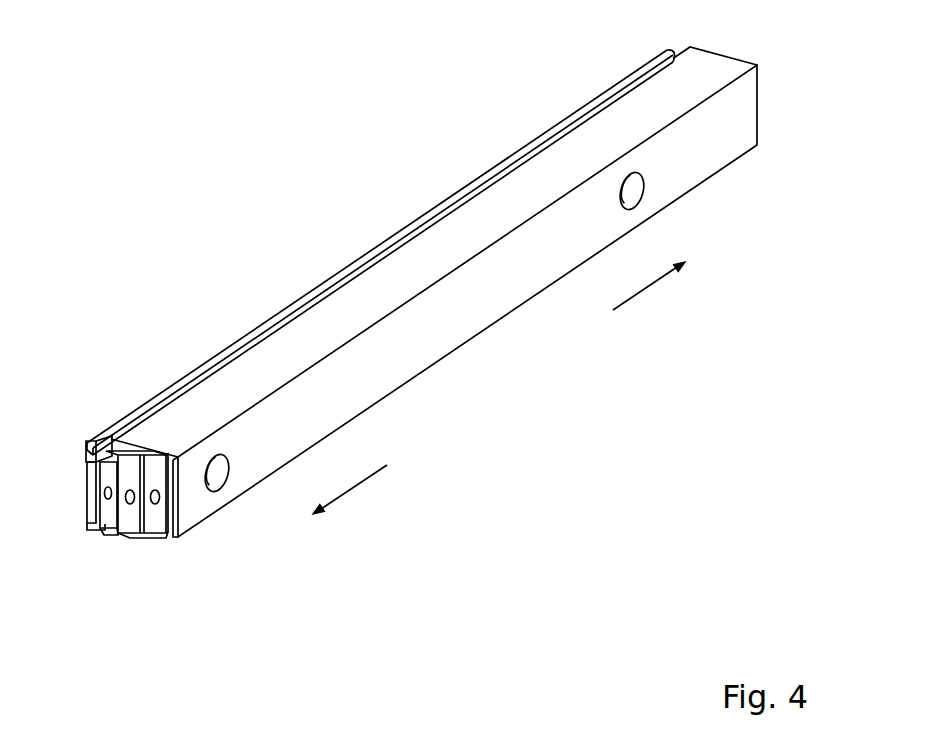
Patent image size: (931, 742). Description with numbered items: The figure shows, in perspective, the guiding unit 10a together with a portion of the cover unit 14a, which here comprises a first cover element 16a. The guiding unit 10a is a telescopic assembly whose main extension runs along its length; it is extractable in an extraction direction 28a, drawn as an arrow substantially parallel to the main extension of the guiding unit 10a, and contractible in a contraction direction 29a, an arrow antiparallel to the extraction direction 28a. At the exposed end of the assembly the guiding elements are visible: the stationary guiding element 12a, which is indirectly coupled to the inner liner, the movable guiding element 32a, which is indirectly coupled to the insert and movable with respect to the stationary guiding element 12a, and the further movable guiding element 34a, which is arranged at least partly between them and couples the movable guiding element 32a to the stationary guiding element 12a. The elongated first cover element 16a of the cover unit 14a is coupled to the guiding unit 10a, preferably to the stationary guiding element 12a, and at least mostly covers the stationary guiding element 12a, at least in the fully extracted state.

The guiding unit 10a is at (121, 456).
The stationary guiding element 12a is at (130, 538).
The cover unit 14a is at (298, 250).
The first cover element 16a is at (486, 328).
The extraction direction 28a is at (355, 487).
The contraction direction 29a is at (647, 290).
The movable guiding element 32a is at (100, 530).
The further movable guiding element 34a is at (110, 535).